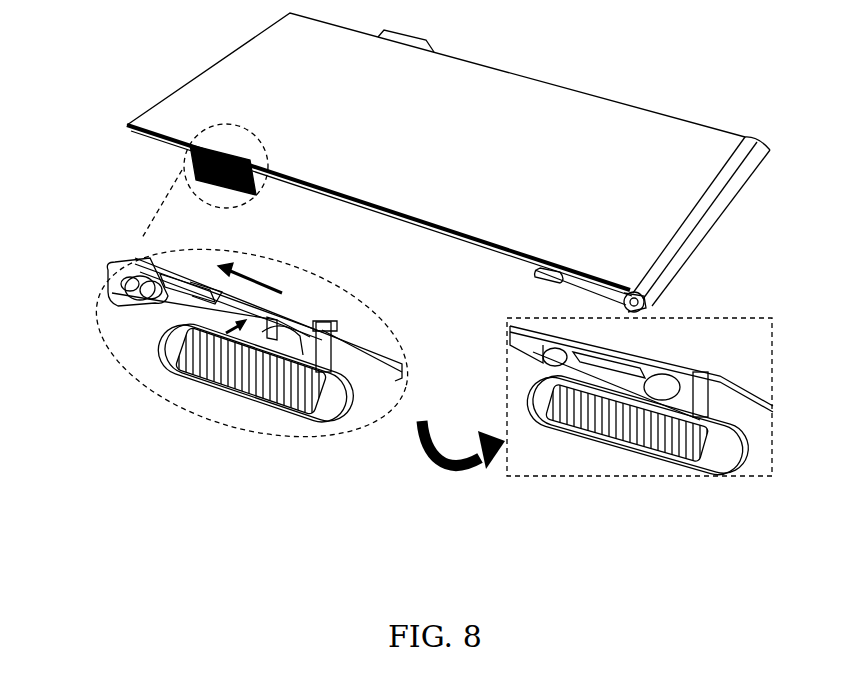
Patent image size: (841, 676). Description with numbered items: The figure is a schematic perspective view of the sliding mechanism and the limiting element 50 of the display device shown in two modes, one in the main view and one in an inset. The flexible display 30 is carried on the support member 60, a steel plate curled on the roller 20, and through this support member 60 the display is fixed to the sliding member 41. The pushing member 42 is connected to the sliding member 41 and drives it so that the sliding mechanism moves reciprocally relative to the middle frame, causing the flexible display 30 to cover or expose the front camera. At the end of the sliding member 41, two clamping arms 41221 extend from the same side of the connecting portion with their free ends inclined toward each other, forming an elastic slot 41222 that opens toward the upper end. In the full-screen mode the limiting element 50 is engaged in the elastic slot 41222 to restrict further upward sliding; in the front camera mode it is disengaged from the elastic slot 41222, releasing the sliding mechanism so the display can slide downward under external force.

The flexible display 30 is at (528, 85).
The support member 60 is at (762, 160).
The roller 20 is at (650, 292).
The limiting element 50 is at (110, 278).
The sliding member 41 is at (320, 318).
The pushing member 42 is at (313, 407).
The clamping arms 41221 is at (235, 286).
The elastic slot 41222 is at (222, 318).